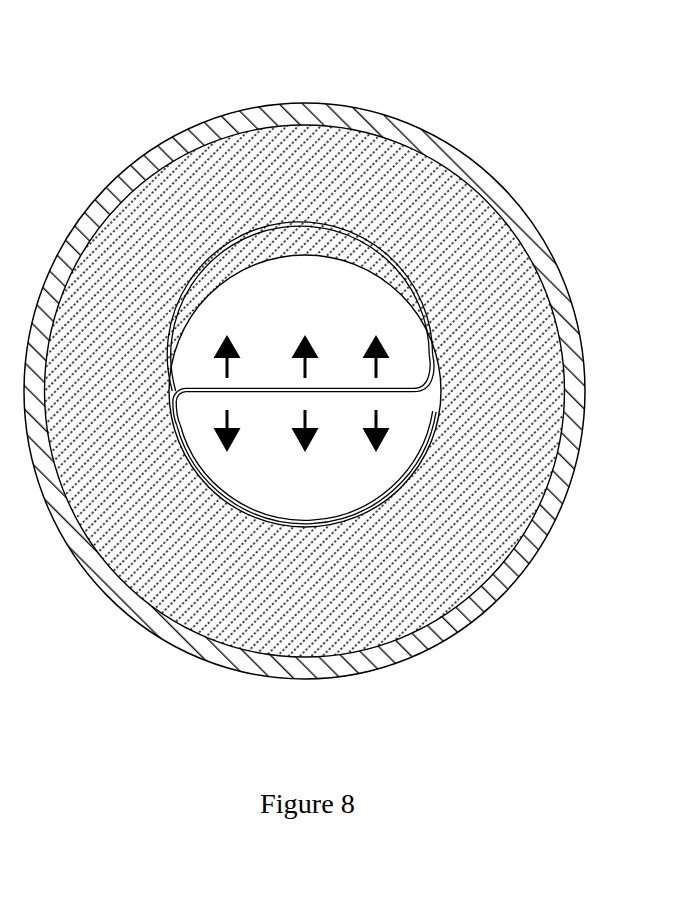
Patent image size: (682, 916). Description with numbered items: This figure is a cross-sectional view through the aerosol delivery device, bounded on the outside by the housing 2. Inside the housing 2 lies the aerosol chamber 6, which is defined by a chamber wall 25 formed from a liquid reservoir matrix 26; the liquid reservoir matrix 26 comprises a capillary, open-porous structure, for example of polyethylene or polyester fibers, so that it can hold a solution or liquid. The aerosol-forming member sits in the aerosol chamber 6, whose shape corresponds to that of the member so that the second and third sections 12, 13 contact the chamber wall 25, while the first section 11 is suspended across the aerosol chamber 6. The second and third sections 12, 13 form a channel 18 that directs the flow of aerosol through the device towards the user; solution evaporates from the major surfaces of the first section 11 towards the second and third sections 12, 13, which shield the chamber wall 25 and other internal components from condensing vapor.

The housing 2 is at (402, 137).
The aerosol chamber 6 is at (287, 318).
The first section 11 is at (327, 393).
The second section 12 is at (380, 515).
The third section 13 is at (305, 255).
The channel 18 is at (245, 332).
The chamber wall 25 is at (457, 262).
The liquid reservoir matrix 26 is at (540, 452).